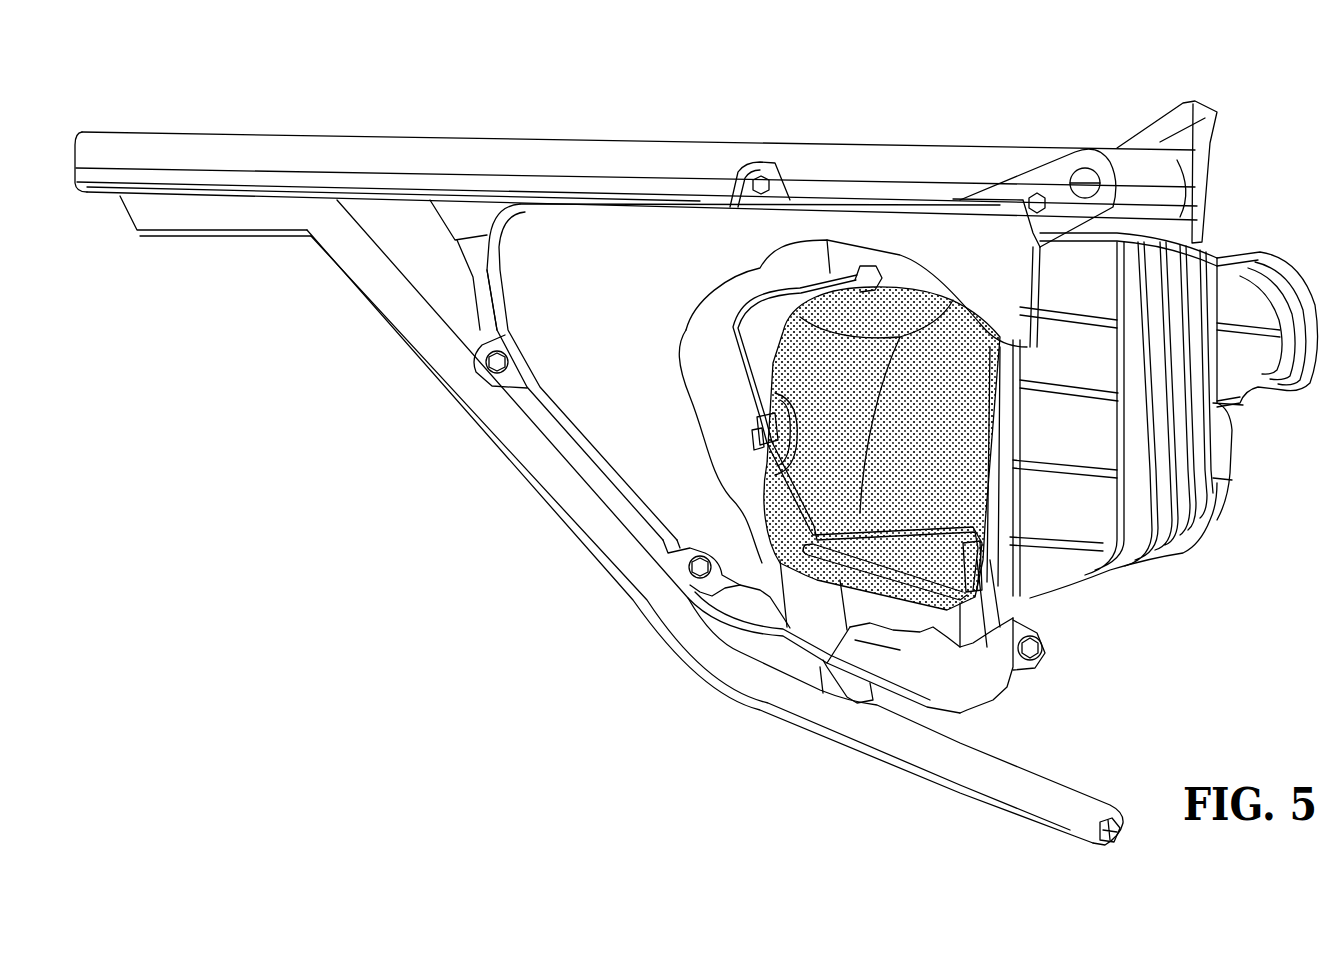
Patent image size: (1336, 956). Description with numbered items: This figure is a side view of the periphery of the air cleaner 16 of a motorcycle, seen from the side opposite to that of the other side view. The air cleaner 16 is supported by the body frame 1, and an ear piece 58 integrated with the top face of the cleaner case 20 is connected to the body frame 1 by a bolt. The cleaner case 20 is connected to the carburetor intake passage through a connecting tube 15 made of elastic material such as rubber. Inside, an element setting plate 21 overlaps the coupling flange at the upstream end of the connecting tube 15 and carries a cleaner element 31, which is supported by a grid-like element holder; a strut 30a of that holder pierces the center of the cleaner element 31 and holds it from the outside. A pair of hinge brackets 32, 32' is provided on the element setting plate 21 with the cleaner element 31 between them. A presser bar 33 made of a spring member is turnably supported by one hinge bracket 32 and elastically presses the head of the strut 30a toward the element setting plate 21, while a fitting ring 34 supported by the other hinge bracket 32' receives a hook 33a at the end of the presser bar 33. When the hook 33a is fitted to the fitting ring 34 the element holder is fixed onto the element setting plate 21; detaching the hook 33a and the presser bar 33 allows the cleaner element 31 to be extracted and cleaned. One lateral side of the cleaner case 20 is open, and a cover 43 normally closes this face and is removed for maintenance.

The body frame 1 is at (404, 124).
The connecting tube 15 is at (1178, 520).
The air cleaner 16 is at (704, 238).
The cleaner case 20 is at (478, 273).
The element setting plate 21 is at (900, 260).
The strut 30a is at (765, 405).
The cleaner element 31 is at (980, 340).
The hinge bracket 32 is at (838, 184).
The hinge bracket 32' is at (1034, 595).
The presser bar 33 is at (740, 340).
The hook 33a is at (802, 555).
The fitting ring 34 is at (908, 580).
The cover 43 is at (560, 373).
The ear piece 58 is at (1062, 160).